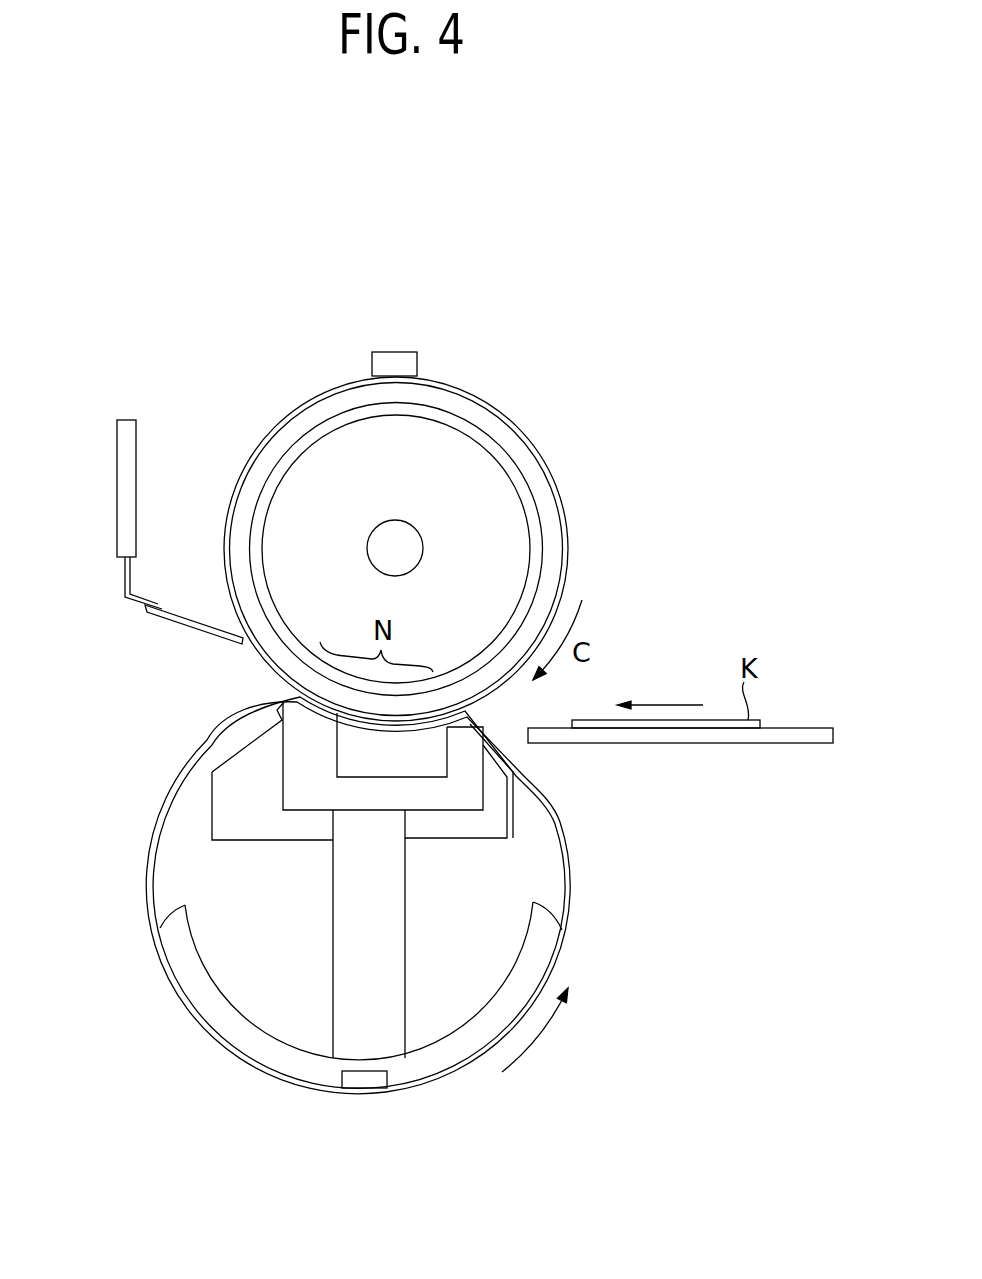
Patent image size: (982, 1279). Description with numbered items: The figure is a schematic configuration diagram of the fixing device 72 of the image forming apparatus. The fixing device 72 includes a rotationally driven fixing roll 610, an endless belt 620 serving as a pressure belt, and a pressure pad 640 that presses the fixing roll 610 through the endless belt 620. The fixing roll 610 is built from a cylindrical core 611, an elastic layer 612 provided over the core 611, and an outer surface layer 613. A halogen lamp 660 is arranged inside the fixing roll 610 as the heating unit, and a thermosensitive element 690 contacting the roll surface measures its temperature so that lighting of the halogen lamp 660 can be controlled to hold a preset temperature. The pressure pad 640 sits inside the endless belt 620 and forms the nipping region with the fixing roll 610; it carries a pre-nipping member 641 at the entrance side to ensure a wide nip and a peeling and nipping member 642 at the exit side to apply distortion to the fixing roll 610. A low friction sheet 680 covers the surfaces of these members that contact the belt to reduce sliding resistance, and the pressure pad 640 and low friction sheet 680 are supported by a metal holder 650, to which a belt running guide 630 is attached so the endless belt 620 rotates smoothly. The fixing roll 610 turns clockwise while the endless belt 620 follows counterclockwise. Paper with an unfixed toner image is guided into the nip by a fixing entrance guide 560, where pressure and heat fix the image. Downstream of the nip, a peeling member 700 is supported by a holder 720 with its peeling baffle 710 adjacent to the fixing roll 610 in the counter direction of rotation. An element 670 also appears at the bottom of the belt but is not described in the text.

The fixing device 72 is at (397, 238).
The fixing entrance guide 560 is at (777, 747).
The fixing roll 610 is at (533, 427).
The cylindrical core 611 is at (522, 492).
The elastic layer 612 is at (555, 530).
The surface layer 613 is at (567, 572).
The endless belt 620 is at (573, 862).
The belt running guide 630 is at (542, 953).
The pressure pad 640 is at (307, 812).
The pre-nipping member 641 is at (422, 770).
The peeling and nipping member 642 is at (292, 727).
The holder 650 is at (232, 813).
The halogen lamp 660 is at (397, 520).
The lubricant supply member 670 is at (369, 1078).
The low friction sheet 680 is at (524, 773).
The thermosensitive element 690 is at (400, 352).
The peeling member 700 is at (128, 628).
The peeling baffle 710 is at (190, 612).
The holder 720 is at (123, 577).